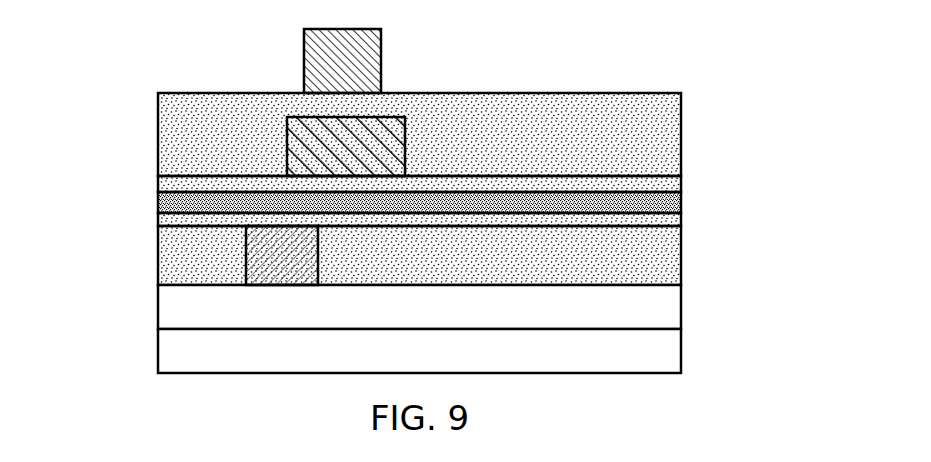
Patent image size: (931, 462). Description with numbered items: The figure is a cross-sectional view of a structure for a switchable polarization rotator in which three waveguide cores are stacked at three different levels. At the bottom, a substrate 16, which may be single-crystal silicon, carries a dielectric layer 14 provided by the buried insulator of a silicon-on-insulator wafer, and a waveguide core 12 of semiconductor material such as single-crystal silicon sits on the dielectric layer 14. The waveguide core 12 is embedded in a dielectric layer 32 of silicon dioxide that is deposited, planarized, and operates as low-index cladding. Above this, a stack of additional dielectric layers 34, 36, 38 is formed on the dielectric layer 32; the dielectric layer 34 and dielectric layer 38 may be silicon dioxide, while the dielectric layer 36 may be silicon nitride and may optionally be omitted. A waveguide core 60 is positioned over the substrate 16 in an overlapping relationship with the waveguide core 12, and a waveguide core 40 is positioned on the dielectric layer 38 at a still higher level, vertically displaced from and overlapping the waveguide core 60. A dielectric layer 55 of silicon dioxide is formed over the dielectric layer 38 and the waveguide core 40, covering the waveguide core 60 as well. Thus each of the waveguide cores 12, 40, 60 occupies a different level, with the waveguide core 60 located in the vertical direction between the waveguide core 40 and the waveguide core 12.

The waveguide core 12 is at (263, 249).
The dielectric layer 14 is at (183, 307).
The substrate 16 is at (187, 357).
The dielectric layer 32 is at (660, 270).
The dielectric layer 34 is at (660, 220).
The dielectric layer 36 is at (212, 202).
The dielectric layer 38 is at (658, 185).
The waveguide core 40 is at (352, 60).
The dielectric layer 55 is at (208, 117).
The waveguide core 60 is at (320, 158).